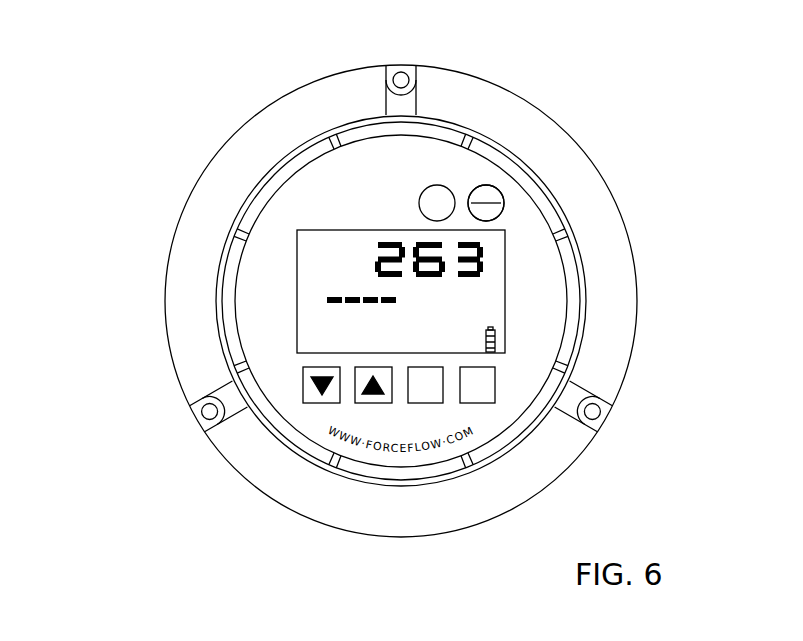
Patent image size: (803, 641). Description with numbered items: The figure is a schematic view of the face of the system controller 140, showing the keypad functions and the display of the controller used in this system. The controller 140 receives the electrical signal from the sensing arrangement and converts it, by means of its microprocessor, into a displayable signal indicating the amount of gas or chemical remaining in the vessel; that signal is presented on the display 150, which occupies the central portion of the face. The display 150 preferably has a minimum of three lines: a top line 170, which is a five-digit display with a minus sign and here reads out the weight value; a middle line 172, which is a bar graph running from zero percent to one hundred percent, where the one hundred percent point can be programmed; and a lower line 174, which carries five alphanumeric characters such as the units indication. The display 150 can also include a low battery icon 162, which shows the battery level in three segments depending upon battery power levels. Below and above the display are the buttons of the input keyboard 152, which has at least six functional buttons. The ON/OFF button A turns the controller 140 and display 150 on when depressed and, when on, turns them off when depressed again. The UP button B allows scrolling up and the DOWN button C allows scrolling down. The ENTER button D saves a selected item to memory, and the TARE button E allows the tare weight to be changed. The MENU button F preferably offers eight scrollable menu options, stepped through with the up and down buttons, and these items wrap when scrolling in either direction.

The system controller 140 is at (180, 127).
The display 150 is at (325, 252).
The input keyboard 152 is at (490, 182).
The top line 170 is at (492, 262).
The middle line 172 is at (470, 310).
The lower line 174 is at (328, 336).
The low battery icon 162 is at (497, 355).
The ON/OFF button A is at (505, 197).
The UP button B is at (355, 404).
The DOWN button C is at (303, 375).
The ENTER button D is at (415, 405).
The TARE button E is at (470, 404).
The MENU button F is at (445, 185).